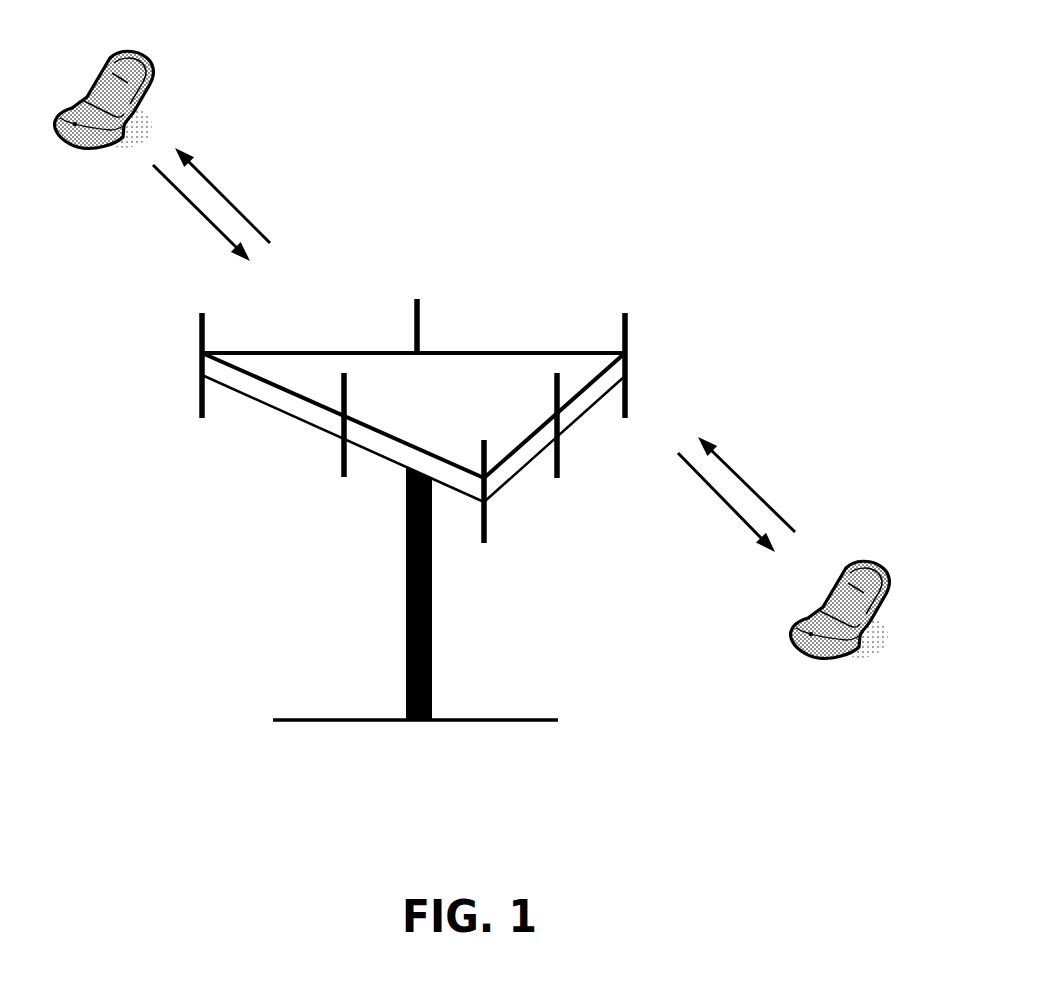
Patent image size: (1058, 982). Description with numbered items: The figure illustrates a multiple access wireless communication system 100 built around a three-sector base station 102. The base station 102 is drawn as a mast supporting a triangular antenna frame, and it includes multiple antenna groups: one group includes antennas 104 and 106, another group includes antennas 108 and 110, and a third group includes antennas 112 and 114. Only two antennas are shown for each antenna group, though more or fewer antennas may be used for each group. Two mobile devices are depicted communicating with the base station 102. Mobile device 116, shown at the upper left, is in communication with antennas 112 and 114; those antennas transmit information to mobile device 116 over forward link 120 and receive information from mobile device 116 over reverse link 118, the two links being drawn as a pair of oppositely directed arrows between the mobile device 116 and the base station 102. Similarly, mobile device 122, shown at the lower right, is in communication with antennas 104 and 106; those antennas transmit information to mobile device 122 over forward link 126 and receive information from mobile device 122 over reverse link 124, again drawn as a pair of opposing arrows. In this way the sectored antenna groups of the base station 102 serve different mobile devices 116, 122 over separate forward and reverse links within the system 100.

The multiple access wireless communication system 100 is at (599, 99).
The 3-sector base station 102 is at (432, 721).
The antenna 104 is at (626, 313).
The antenna 106 is at (558, 455).
The antenna 108 is at (485, 520).
The antenna 110 is at (343, 477).
The antenna 112 is at (203, 313).
The antenna 114 is at (418, 312).
The mobile device 116 is at (117, 49).
The reverse link 118 is at (216, 229).
The forward link 120 is at (225, 196).
The mobile device 122 is at (850, 561).
The reverse link 124 is at (742, 481).
The forward link 126 is at (732, 511).